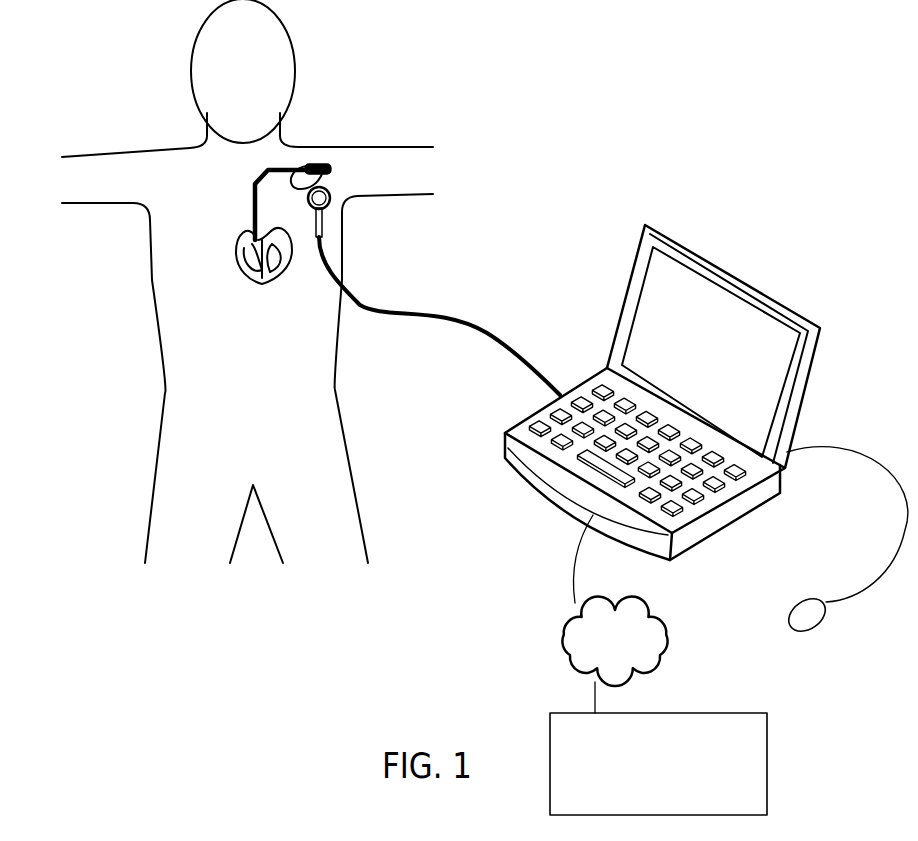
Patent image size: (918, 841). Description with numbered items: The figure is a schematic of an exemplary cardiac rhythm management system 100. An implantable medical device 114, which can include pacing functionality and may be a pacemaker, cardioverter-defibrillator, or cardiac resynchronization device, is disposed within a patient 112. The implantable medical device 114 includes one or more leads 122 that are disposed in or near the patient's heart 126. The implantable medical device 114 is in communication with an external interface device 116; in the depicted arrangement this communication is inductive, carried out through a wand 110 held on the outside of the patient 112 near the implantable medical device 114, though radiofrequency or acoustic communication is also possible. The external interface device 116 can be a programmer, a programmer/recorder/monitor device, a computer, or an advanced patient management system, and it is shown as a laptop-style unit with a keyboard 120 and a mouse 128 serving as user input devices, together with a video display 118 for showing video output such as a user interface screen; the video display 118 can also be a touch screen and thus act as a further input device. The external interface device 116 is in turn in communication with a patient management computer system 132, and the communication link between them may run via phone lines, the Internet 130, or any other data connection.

The cardiac rhythm management system 100 is at (428, 475).
The wand 110 is at (320, 227).
The patient 112 is at (127, 180).
The implantable medical device 114 is at (322, 178).
The external interface device 116 is at (717, 518).
The video display 118 is at (717, 320).
The keyboard 120 is at (733, 487).
The lead 122 is at (253, 187).
The heart 126 is at (270, 284).
The mouse 128 is at (798, 615).
The Internet 130 is at (614, 614).
The patient management computer system 132 is at (742, 713).